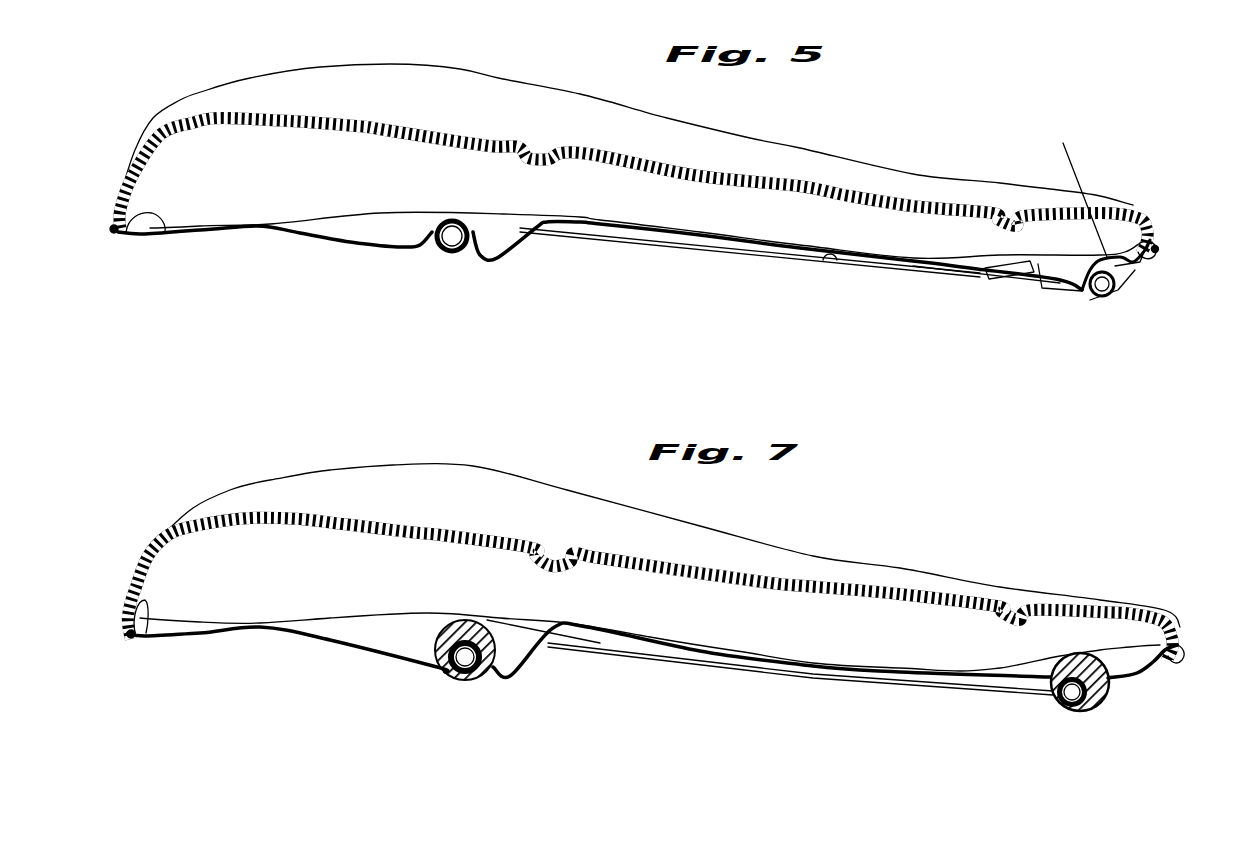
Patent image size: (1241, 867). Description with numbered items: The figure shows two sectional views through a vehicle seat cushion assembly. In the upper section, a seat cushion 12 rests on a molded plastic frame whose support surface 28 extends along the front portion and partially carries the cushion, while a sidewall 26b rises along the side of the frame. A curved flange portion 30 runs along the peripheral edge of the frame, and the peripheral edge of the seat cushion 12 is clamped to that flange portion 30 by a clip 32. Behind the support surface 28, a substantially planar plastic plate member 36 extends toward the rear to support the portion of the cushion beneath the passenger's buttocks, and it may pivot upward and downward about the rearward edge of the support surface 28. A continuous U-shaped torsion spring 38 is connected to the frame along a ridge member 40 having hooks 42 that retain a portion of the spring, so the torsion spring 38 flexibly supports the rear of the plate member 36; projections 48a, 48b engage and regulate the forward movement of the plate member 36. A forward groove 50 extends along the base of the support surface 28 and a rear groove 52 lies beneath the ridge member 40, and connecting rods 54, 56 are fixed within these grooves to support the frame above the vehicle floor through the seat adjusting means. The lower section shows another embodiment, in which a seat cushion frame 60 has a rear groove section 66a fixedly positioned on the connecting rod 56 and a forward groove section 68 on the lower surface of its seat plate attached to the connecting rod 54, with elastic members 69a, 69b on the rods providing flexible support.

In FIG. 5, the seat cushion 12 is at (670, 210).
In FIG. 7, the seat cushion 12 is at (737, 627).
In FIG. 5, the sidewall 26b is at (1137, 262).
In FIG. 5, the support surface 28 is at (270, 224).
In FIG. 7, the support surface 28 is at (340, 620).
In FIG. 5, the curved flange portion 30 is at (163, 229).
In FIG. 7, the curved flange portion 30 is at (135, 590).
In FIG. 5, the clip 32 is at (116, 236).
In FIG. 5, the plate member 36 is at (830, 262).
In FIG. 7, the plate member 36 is at (833, 667).
In FIG. 5, the torsion spring 38 is at (1022, 273).
In FIG. 5, the ridge member 40 is at (1133, 267).
In FIG. 5, the hooks 42 is at (1078, 187).
In FIG. 5, the projection 48a is at (980, 277).
In FIG. 5, the projection 48b is at (1040, 268).
In FIG. 5, the forward groove 50 is at (470, 252).
In FIG. 5, the rear groove 52 is at (1117, 278).
In FIG. 5, the connecting rod 54 is at (440, 247).
In FIG. 7, the connecting rod 54 is at (452, 676).
In FIG. 5, the connecting rod 56 is at (1105, 297).
In FIG. 7, the connecting rod 56 is at (1066, 712).
In FIG. 5, the seat cushion frame 60 is at (577, 237).
In FIG. 7, the seat cushion frame 60 is at (607, 650).
In FIG. 7, the rear groove section 66a is at (1077, 653).
In FIG. 7, the forward groove section 68 is at (459, 620).
In FIG. 7, the elastic member 69a is at (1103, 693).
In FIG. 7, the elastic member 69b is at (478, 680).